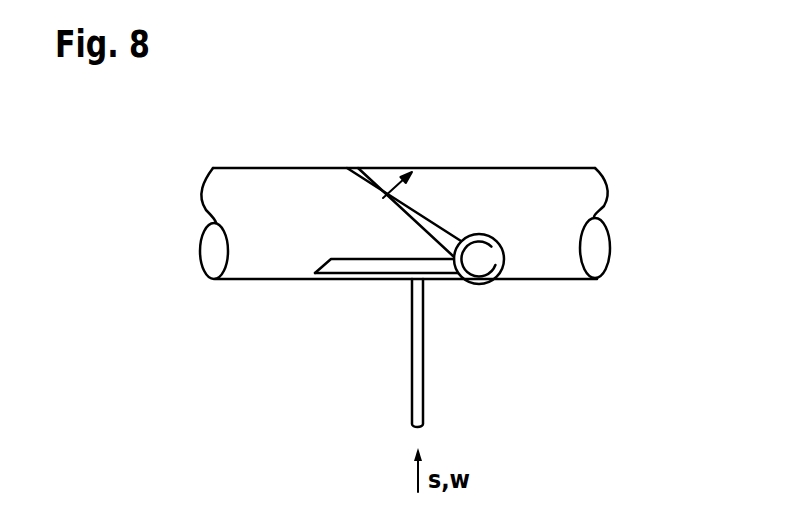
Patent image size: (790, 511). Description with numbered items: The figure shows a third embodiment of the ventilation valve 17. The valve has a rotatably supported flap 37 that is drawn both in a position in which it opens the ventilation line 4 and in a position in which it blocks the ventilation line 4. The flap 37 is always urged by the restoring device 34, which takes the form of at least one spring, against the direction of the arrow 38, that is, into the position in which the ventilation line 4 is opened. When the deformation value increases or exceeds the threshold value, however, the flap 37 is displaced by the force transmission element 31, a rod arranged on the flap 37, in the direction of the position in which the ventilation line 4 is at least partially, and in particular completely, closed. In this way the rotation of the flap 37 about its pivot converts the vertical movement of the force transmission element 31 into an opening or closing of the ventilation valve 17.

The ventilation line 4 is at (270, 181).
The ventilation valve 17 is at (423, 236).
The flap 37 is at (372, 180).
The arrow 38 is at (371, 224).
The restoring device 34 is at (492, 283).
The force transmission element 31 is at (423, 405).